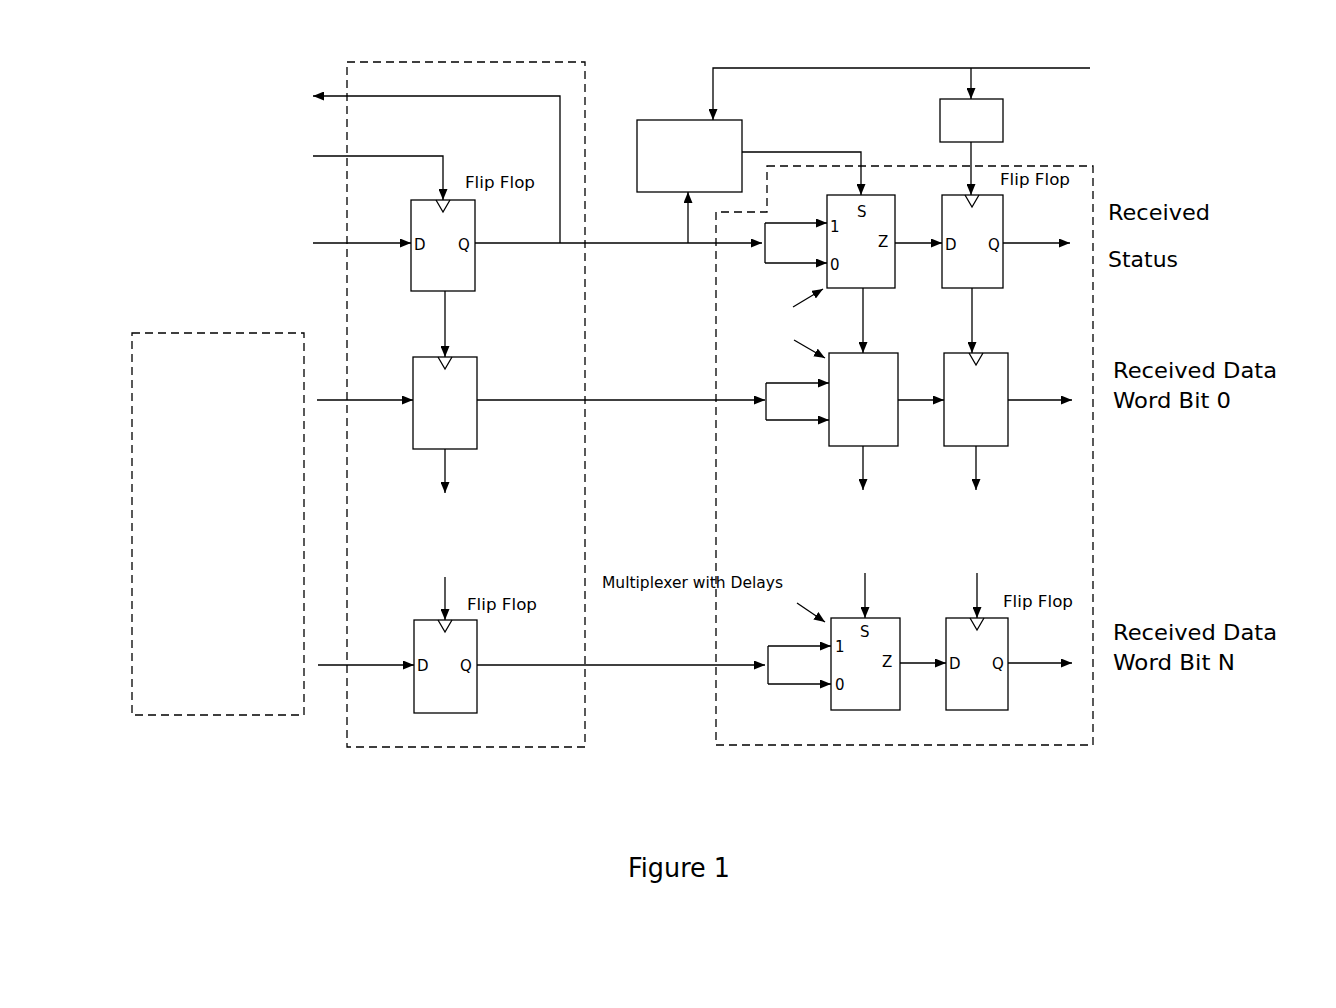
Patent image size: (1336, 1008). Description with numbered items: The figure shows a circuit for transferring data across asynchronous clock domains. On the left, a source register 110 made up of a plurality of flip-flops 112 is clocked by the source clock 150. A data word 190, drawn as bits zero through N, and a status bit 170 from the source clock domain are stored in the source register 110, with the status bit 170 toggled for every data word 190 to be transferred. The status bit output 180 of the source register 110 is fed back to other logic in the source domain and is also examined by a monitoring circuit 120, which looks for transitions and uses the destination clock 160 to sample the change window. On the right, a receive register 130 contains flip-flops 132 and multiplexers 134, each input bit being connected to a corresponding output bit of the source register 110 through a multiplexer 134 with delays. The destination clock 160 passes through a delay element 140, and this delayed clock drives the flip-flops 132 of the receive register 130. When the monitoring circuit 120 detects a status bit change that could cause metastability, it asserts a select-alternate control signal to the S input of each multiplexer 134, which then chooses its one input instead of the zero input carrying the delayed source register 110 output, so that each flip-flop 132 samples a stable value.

The source register 110 is at (437, 444).
The flip-flops 112 is at (455, 437).
The monitoring circuit 120 is at (751, 164).
The receive register 130 is at (914, 495).
The flip-flops 132 is at (1008, 409).
The multiplexers 134 is at (802, 414).
The delay element 140 is at (992, 147).
The source clock 150 is at (292, 171).
The destination clock 160 is at (1004, 85).
The status bit 170 is at (281, 259).
The status bit output 180 is at (354, 150).
The data word 190 is at (218, 524).